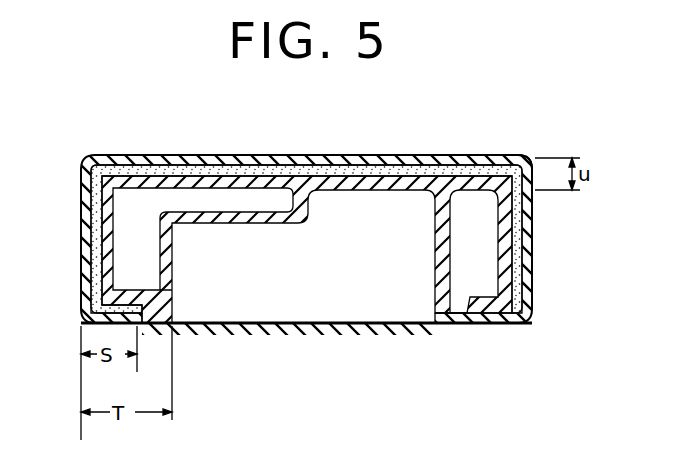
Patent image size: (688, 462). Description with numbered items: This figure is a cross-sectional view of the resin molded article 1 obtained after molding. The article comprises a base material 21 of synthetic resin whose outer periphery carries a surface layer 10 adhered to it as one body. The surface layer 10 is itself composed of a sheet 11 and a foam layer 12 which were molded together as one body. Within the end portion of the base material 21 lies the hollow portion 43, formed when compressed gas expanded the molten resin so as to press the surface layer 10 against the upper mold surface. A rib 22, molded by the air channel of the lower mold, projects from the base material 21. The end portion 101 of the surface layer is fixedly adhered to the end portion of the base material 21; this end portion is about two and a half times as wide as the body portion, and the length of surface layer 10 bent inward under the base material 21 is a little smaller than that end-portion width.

The resin molded article 1 is at (497, 152).
The surface layer 10 is at (90, 162).
The sheet 11 is at (89, 201).
The foam layer 12 is at (97, 272).
The hollow portion 43 is at (145, 246).
The rib 22 is at (282, 217).
The base material 21 is at (172, 303).
The end portion of the surface layer 101 is at (128, 323).